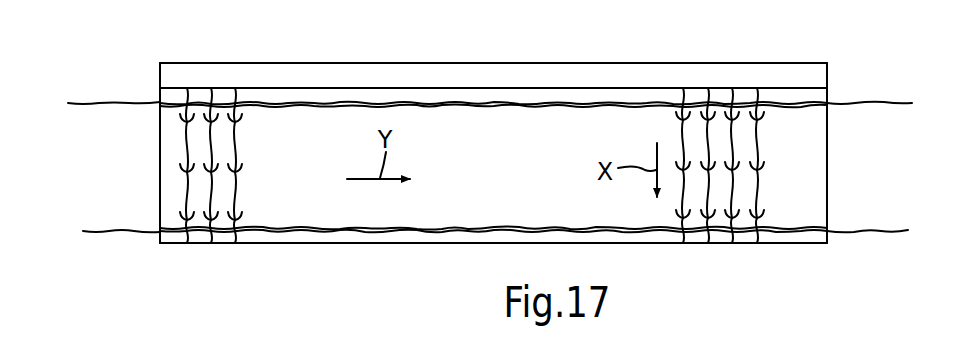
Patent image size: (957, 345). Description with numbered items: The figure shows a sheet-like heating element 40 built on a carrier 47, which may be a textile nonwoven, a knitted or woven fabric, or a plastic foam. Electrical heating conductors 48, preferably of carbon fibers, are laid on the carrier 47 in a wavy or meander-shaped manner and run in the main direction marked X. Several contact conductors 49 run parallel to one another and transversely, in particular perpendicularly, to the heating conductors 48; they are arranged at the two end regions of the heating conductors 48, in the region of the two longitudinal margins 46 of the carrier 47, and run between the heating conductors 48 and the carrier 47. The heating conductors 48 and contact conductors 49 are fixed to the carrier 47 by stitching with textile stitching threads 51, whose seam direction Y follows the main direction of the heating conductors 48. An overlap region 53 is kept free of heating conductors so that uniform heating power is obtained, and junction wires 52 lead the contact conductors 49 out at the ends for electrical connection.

The sheet-like heating element 40 is at (545, 57).
The longitudinal margins 46 is at (311, 62).
The carrier 47 is at (813, 149).
The electrical heating conductors 48 is at (193, 150).
The contact conductors 49 is at (798, 100).
The textile stitching threads 51 is at (237, 170).
The junction wires 52 is at (105, 102).
The overlap region 53 is at (728, 76).